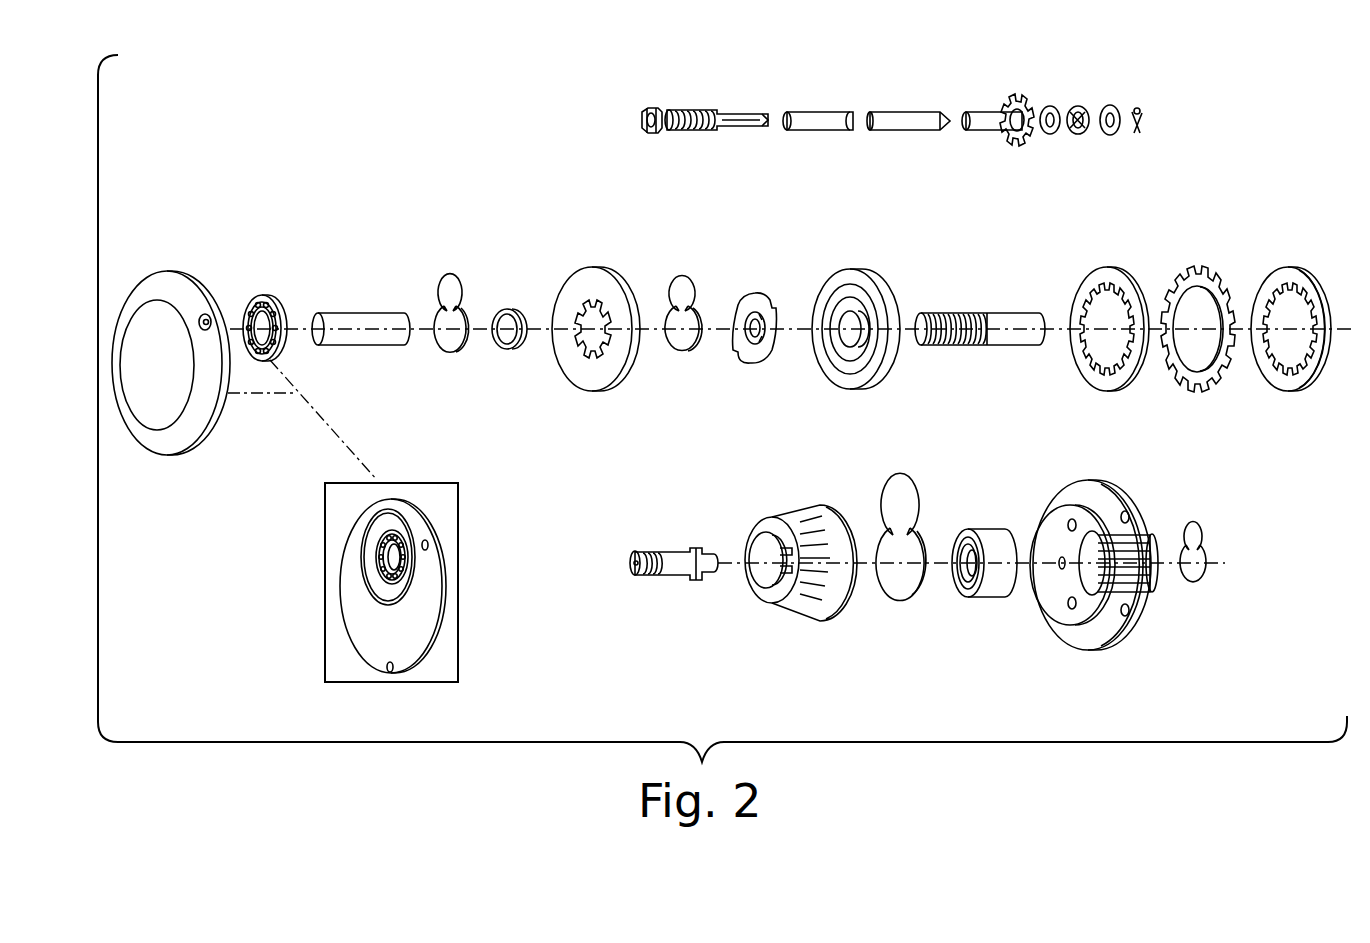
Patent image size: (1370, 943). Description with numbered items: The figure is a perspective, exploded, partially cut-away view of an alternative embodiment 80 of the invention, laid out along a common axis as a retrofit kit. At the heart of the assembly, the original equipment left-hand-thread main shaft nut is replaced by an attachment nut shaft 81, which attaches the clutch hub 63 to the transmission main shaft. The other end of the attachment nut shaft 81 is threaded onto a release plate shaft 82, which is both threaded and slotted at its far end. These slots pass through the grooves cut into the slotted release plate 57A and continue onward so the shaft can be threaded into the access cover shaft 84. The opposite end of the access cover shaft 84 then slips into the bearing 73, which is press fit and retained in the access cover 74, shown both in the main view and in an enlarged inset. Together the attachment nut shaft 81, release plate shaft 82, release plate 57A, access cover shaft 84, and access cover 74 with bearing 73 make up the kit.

The alternative embodiment 80 is at (488, 188).
The access cover 74 is at (185, 280).
The bearing 73 is at (268, 297).
The access cover shaft 84 is at (360, 322).
The release plate 57A is at (750, 300).
The release plate shaft 82 is at (995, 318).
The attachment nut shaft 81 is at (672, 555).
The clutch hub 63 is at (805, 520).